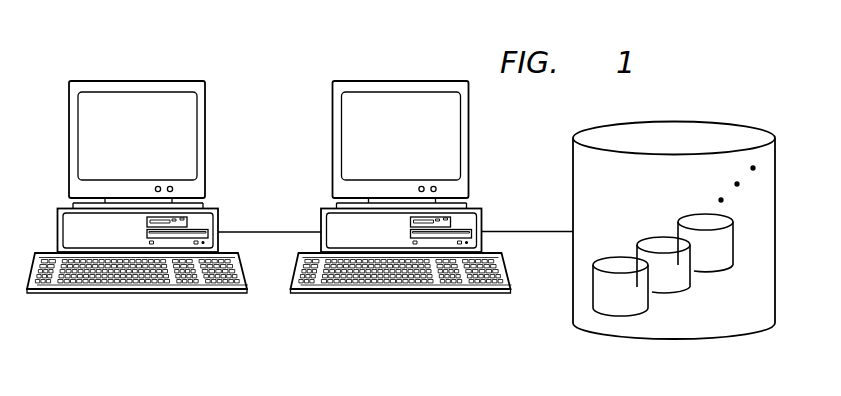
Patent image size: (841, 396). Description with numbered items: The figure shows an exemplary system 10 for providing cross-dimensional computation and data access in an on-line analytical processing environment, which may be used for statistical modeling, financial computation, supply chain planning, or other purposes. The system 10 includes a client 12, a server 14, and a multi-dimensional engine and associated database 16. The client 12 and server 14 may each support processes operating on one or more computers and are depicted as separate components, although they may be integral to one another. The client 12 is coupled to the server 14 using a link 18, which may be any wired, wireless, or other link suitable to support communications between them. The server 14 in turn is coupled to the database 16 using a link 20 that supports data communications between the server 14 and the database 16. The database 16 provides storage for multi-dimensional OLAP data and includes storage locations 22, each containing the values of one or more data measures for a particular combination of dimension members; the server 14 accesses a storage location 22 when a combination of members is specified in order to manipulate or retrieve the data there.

The system 10 is at (267, 58).
The client 12 is at (138, 293).
The server 14 is at (401, 293).
The multi-dimensional engine and associated database 16 is at (673, 132).
The link 18 is at (270, 232).
The link 20 is at (520, 231).
The storage location 22 is at (658, 240).